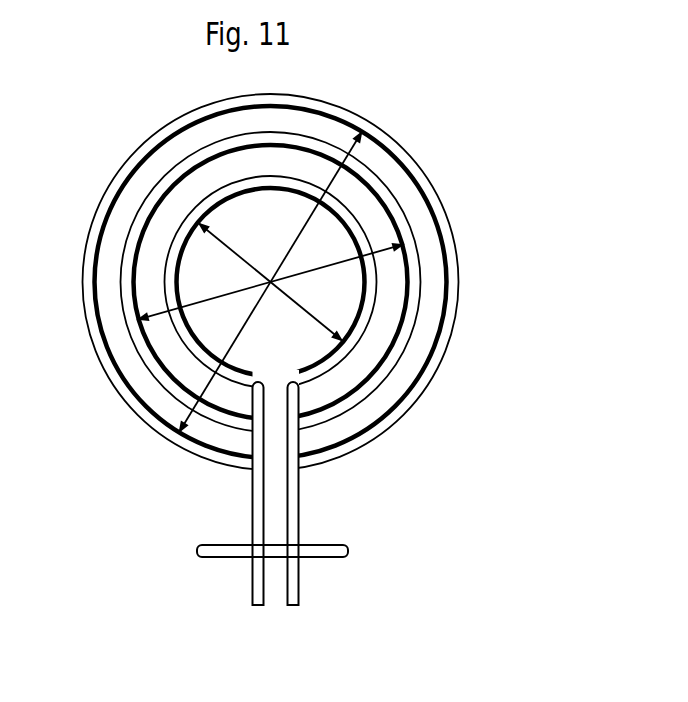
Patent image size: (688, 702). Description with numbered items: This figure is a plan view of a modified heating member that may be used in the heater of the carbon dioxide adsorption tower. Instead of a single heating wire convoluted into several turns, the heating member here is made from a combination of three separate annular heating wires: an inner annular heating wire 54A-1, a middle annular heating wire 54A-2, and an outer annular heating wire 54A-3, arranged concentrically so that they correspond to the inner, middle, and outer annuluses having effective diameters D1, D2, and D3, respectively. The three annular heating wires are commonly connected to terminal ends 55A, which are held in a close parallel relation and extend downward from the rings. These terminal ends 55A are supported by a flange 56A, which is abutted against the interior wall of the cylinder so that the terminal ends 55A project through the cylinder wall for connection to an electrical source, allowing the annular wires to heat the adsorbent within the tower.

The annular heating wire 54A-3 is at (405, 160).
The annular heating wire 54A-2 is at (412, 265).
The annular heating wire 54A-1 is at (362, 333).
The terminal ends 55A is at (252, 588).
The flange 56A is at (332, 543).
The effective diameter of inner annulus D1 is at (271, 282).
The effective diameter of middle annulus D2 is at (270, 273).
The effective diameter of outer annulus D3 is at (271, 282).